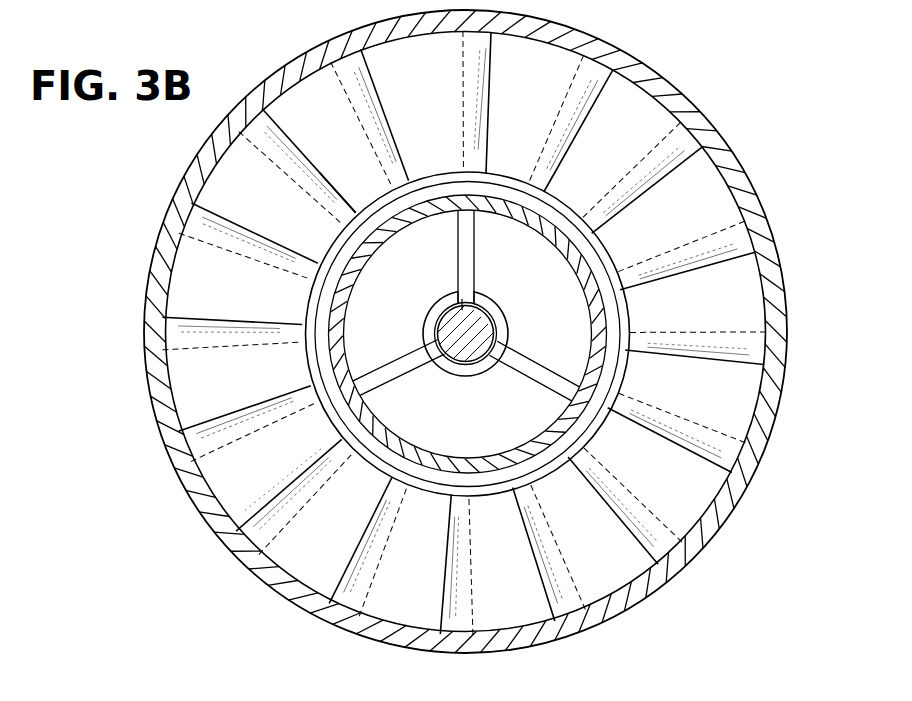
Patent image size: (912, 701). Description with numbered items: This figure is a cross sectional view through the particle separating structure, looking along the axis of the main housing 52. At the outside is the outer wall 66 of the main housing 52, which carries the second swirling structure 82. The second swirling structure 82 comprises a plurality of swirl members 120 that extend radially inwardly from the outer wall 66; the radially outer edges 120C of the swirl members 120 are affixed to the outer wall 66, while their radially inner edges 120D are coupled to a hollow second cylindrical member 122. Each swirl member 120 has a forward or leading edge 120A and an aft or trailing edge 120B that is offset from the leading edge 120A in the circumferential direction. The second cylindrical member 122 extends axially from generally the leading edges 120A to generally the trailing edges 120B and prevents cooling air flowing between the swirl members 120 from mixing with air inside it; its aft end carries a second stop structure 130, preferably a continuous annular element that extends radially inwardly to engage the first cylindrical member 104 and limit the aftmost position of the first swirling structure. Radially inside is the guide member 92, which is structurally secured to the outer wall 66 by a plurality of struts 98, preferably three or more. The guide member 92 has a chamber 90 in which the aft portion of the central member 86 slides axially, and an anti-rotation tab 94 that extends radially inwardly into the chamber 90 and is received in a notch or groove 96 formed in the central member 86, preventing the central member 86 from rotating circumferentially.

The main housing 52 is at (750, 492).
The outer wall 66 is at (777, 377).
The second swirling structure 82 is at (312, 550).
The central member 86 is at (489, 331).
The chamber 90 is at (436, 332).
The guide member 92 is at (486, 368).
The anti-rotation tab 94 is at (468, 366).
The notch or groove 96 is at (462, 282).
The struts 98 is at (468, 236).
The first cylindrical member 104 is at (609, 396).
The swirl members 120 is at (397, 57).
The leading edge 120A is at (492, 107).
The trailing edge 120B is at (597, 62).
The radially outer edges 120C is at (277, 92).
The radially inner edges 120D is at (380, 205).
The second cylindrical member 122 is at (449, 174).
The second stop structure 130 is at (498, 192).